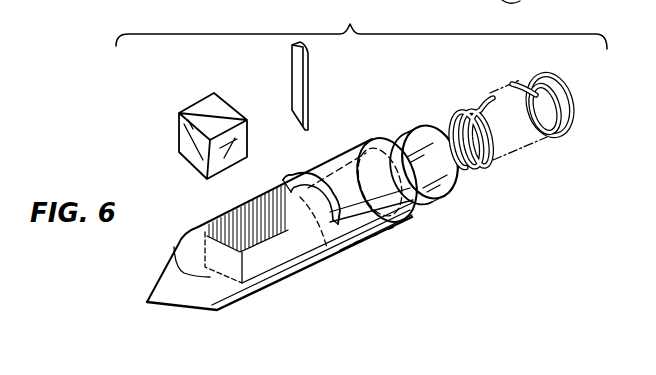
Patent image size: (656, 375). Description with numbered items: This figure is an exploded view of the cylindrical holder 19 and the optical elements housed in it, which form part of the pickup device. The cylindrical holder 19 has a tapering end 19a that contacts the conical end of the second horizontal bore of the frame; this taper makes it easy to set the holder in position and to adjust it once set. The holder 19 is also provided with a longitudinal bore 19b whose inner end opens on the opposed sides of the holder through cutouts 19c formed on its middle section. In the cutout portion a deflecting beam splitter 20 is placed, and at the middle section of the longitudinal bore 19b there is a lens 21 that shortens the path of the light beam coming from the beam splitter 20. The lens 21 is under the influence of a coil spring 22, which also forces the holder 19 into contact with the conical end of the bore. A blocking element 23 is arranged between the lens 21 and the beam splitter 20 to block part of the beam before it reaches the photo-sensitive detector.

The cylindrical holder 19 is at (309, 246).
The tapering end 19a is at (193, 292).
The longitudinal bore 19b is at (392, 231).
The cutouts 19c is at (289, 247).
The deflecting beam splitter 20 is at (177, 143).
The lens 21 is at (442, 188).
The coil spring 22 is at (560, 137).
The blocking element 23 is at (302, 98).